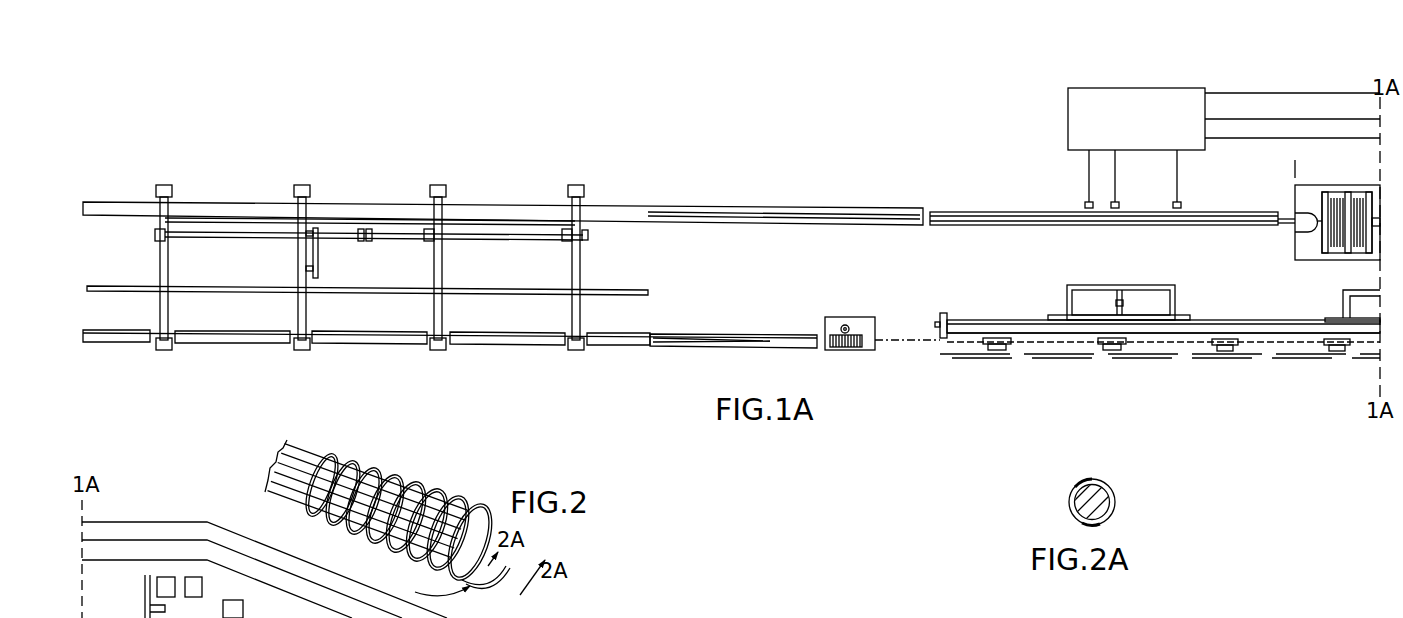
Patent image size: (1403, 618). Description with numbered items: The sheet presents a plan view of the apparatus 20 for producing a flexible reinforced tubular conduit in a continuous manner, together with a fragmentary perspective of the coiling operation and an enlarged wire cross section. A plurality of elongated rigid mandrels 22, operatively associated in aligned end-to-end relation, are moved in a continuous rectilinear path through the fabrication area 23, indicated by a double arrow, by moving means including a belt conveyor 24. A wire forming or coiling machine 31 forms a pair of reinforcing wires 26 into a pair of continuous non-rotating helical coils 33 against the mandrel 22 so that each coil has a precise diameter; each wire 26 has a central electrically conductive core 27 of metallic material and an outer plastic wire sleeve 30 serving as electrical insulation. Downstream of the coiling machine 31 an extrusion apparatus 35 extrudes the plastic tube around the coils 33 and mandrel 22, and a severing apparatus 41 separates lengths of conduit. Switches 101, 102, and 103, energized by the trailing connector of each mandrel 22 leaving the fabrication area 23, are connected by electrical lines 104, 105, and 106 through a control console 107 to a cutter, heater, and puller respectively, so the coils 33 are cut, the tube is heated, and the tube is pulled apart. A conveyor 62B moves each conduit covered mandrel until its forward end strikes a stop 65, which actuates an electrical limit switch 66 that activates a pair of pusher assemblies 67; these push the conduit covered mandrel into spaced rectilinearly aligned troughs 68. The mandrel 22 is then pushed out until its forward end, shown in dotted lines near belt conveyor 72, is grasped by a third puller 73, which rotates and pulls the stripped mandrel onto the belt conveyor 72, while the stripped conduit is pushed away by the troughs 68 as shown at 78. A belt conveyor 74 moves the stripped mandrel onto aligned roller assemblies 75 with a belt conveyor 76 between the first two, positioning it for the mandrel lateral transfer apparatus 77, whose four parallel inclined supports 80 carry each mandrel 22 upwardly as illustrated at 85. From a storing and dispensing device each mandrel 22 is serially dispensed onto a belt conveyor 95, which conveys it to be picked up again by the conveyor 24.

In FIG. 1A, the apparatus 20 is at (852, 158).
In FIG. 1A, the elongated rigid mandrel 22 is at (700, 212).
In FIG. 2, the elongated rigid mandrel 22 is at (268, 462).
In FIG. 1A, the fabrication area 23 is at (1379, 168).
In FIG. 1A, the belt conveyor 24 is at (1122, 226).
In FIG. 1A, the helically wound reinforcing wire 26 is at (1355, 255).
In FIG. 2, the helically wound reinforcing wire 26 is at (430, 478).
In FIG. 2A, the helically wound reinforcing wire 26 is at (1080, 480).
In FIG. 2A, the central electrically conductive core 27 is at (1080, 502).
In FIG. 2A, the outer wire sleeve 30 is at (1110, 503).
In FIG. 1A, the wire forming or coiling machine 31 is at (1292, 195).
In FIG. 2, the wire forming or coiling machine 31 is at (166, 596).
In FIG. 2, the continuous non-rotating coil 33 is at (440, 576).
In FIG. 2, the extrusion apparatus 35 is at (288, 608).
In FIG. 2, the severing means or apparatus 41 is at (610, 608).
In FIG. 1A, the conveyor 62B is at (1205, 322).
In FIG. 1A, the stop 65 is at (945, 313).
In FIG. 1A, the electrical limit switch 66 is at (940, 318).
In FIG. 1A, the pusher assembly 67 is at (1093, 284).
In FIG. 1A, the trough 68 is at (1225, 353).
In FIG. 1A, the belt conveyor 72 is at (860, 350).
In FIG. 1A, the third puller 73 is at (845, 350).
In FIG. 1A, the belt conveyor 74 is at (690, 350).
In FIG. 1A, the roller assembly 75 is at (128, 347).
In FIG. 1A, the belt conveyor 76 is at (350, 348).
In FIG. 1A, the mandrel lateral transfer apparatus 77 is at (158, 252).
In FIG. 1A, the stripped conduit length location 78 is at (1150, 358).
In FIG. 1A, the inclined support 80 is at (168, 312).
In FIG. 1A, the mandrel upward movement 85 is at (170, 283).
In FIG. 1A, the belt conveyor 95 is at (497, 205).
In FIG. 1A, the electrical switch 101 is at (1083, 204).
In FIG. 1A, the electrical switch 102 is at (1119, 204).
In FIG. 1A, the electrical switch 103 is at (1182, 205).
In FIG. 1A, the electrical line 104 is at (1294, 96).
In FIG. 2, the electrical line 104 is at (170, 521).
In FIG. 1A, the electrical line 105 is at (1294, 121).
In FIG. 2, the electrical line 105 is at (225, 505).
In FIG. 1A, the electrical line 106 is at (1280, 140).
In FIG. 2, the electrical line 106 is at (140, 561).
In FIG. 1A, the control console 107 is at (1078, 100).